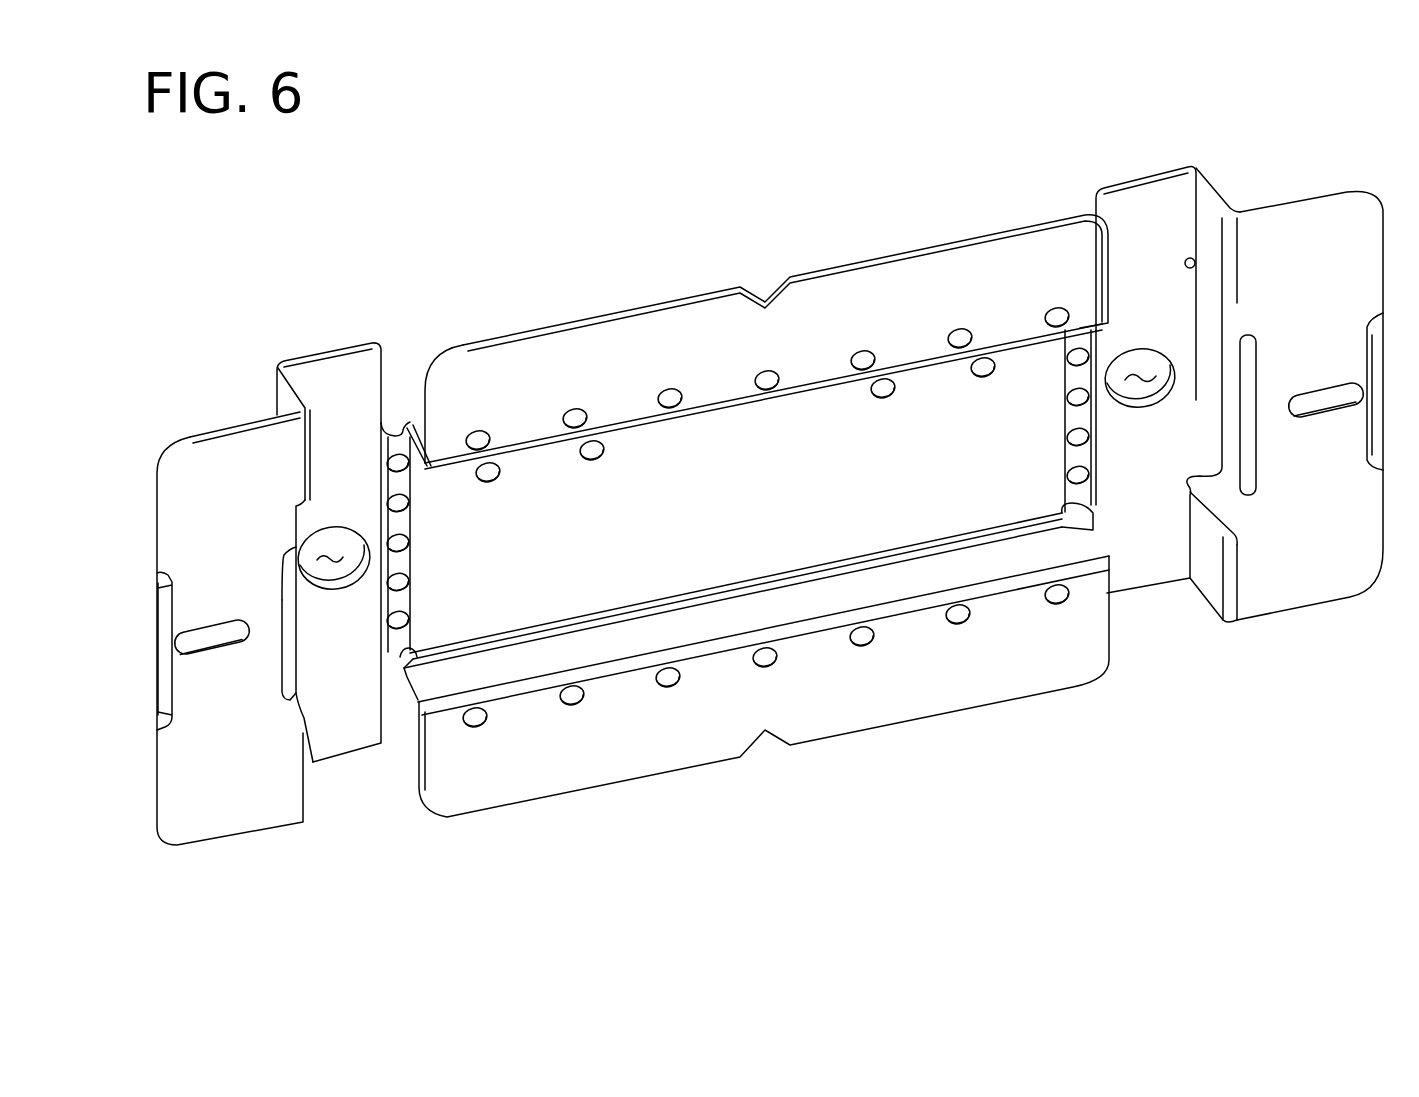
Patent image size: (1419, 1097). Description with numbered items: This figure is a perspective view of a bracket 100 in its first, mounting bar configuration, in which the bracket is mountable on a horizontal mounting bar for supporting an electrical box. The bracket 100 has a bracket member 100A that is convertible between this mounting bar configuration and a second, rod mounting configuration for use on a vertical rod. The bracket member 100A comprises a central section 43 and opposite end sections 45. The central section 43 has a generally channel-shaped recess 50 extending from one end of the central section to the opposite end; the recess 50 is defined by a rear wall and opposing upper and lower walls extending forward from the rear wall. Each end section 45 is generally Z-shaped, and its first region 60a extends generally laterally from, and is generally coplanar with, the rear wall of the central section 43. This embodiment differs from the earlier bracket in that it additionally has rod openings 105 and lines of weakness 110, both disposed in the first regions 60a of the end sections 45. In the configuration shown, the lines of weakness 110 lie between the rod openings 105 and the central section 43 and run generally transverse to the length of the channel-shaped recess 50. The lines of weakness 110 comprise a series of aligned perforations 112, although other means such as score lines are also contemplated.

The bracket 100 is at (624, 278).
The bracket member 100A is at (770, 500).
The central section 43 is at (956, 234).
The channel-shaped recess 50 is at (706, 497).
The lines of weakness 110 is at (386, 516).
The aligned perforations 112 is at (410, 587).
The first region 60a is at (352, 730).
The end section 45 is at (318, 768).
The rod openings 105 is at (328, 553).